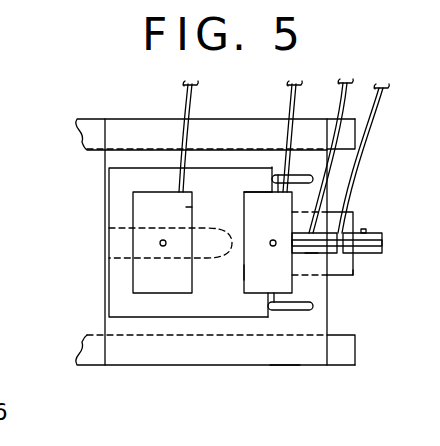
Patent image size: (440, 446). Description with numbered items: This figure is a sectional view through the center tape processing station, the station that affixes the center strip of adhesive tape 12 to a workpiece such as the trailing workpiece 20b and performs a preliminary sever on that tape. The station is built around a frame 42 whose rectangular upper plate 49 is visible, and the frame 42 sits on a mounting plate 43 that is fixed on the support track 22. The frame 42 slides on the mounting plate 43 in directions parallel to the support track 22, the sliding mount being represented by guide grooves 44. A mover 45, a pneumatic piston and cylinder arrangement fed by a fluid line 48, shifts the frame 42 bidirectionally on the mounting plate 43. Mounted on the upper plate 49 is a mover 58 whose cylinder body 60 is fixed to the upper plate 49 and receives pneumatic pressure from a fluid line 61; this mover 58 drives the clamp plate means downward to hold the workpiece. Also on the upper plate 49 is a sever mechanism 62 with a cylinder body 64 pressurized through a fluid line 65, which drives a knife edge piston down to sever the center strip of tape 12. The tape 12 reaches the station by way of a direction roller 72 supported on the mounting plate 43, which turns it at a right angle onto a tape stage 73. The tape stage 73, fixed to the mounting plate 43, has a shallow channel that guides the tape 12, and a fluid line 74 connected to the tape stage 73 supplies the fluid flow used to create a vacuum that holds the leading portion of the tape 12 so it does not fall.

The center strip of adhesive tape 12 is at (383, 244).
The trailing workpiece 20b is at (99, 228).
The support track 22 is at (88, 126).
The frame 42 is at (163, 297).
The mounting plate 43 is at (284, 360).
The guide grooves 44 is at (306, 178).
The mover 45 is at (356, 278).
The fluid line 48 is at (385, 104).
The upper plate 49 is at (236, 313).
The mover 58 is at (147, 190).
The cylinder body 60 is at (186, 207).
The fluid line 61 is at (181, 104).
The sever mechanism 62 is at (257, 190).
The cylinder body 64 is at (246, 272).
The fluid line 65 is at (288, 100).
The direction roller 72 is at (373, 232).
The tape stage 73 is at (311, 253).
The fluid line 74 is at (347, 100).